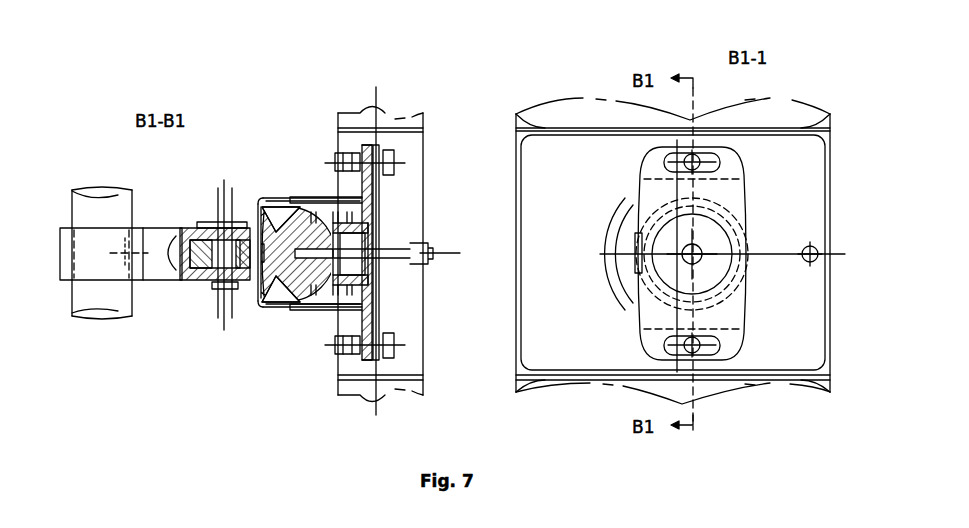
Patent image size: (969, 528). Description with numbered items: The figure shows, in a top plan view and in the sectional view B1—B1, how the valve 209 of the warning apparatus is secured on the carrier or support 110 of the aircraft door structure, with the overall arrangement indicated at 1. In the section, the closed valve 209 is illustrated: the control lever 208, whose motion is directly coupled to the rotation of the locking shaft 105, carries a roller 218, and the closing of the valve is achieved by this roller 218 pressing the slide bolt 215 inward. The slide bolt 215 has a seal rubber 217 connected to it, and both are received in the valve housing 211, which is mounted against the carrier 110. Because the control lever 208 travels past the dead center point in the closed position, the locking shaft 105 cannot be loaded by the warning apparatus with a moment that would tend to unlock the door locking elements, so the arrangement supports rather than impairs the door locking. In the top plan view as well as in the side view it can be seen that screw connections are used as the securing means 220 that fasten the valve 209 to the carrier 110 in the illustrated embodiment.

The mounting arrangement 1 is at (864, 188).
The locking shaft 105 is at (85, 293).
The carrier or support 110 is at (370, 123).
The control lever 208 is at (147, 287).
The valve 209 is at (262, 146).
The valve housing 211 is at (277, 307).
The slide bolt 215 is at (260, 203).
The seal rubber 217 is at (327, 197).
The roller 218 is at (195, 287).
The securing means 220 is at (390, 153).